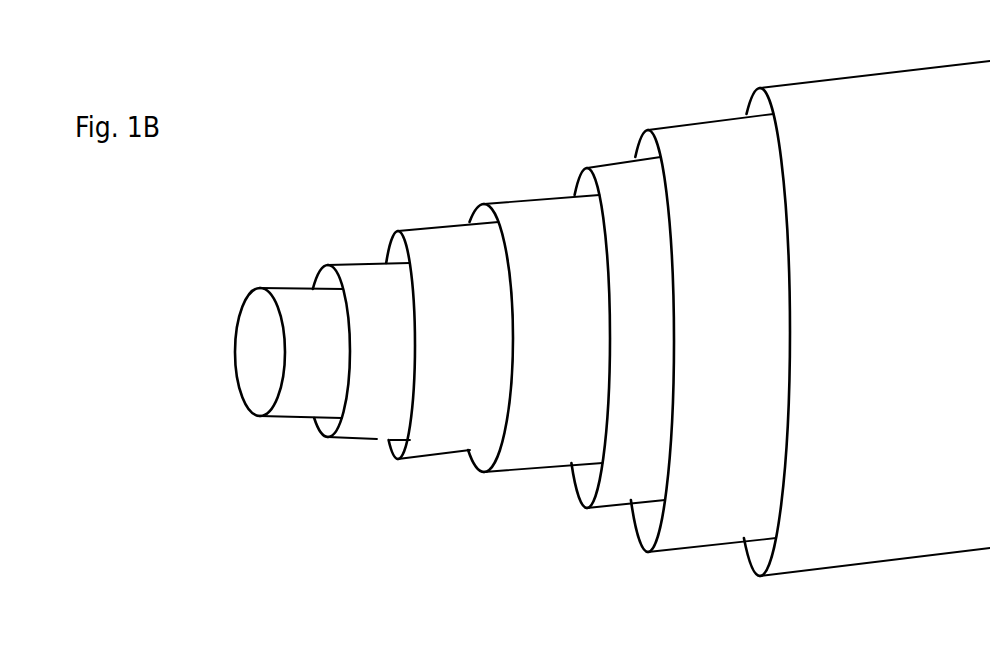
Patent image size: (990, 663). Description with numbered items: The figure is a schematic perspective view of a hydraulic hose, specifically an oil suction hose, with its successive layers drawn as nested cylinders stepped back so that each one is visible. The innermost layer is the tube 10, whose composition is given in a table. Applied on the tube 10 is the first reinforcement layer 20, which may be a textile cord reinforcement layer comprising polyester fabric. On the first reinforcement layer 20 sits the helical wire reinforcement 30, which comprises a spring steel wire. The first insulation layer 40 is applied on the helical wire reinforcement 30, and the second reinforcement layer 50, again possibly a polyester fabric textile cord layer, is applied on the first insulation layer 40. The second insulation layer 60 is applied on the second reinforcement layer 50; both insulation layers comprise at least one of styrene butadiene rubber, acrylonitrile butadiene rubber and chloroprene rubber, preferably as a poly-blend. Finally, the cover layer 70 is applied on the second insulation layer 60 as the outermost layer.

The tube 10 is at (297, 307).
The first reinforcement layer 20 is at (363, 280).
The helical wire reinforcement 30 is at (445, 247).
The first insulation layer 40 is at (537, 225).
The second reinforcement layer 50 is at (625, 180).
The second insulation layer 60 is at (712, 155).
The cover layer 70 is at (808, 113).